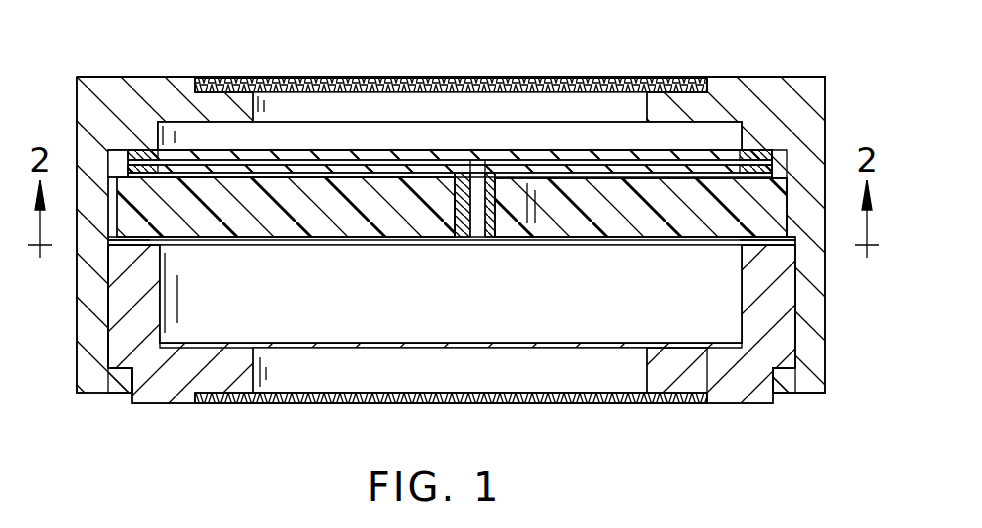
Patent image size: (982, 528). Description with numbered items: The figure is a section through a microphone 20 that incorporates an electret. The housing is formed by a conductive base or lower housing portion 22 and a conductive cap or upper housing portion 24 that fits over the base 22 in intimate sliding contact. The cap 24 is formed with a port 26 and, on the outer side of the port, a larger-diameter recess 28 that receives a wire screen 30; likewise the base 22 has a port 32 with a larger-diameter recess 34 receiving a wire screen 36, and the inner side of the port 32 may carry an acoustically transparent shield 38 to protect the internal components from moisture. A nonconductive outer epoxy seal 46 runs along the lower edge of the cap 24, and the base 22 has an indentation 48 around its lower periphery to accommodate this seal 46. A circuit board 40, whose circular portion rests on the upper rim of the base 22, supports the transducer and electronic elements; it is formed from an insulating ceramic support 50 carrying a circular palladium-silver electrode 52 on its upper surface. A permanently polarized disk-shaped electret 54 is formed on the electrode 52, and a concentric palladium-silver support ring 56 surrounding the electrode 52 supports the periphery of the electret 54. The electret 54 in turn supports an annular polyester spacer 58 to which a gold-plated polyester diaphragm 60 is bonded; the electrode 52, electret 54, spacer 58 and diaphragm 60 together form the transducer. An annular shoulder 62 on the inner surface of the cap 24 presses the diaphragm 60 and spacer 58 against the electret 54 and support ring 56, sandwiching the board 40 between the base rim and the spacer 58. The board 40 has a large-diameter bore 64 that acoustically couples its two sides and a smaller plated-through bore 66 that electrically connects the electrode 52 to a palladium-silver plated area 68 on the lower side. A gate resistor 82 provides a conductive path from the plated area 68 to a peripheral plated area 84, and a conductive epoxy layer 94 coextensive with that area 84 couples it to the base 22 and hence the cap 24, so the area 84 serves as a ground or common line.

The microphone 20 is at (821, 54).
The base or lower housing portion 22 is at (762, 320).
The cap or upper housing portion 24 is at (128, 77).
The port 26 is at (645, 110).
The recess 28 is at (223, 77).
The wire screen 30 is at (310, 78).
The port 32 is at (647, 370).
The recess 34 is at (345, 404).
The wire screen 36 is at (478, 393).
The acoustically transparent shield 38 is at (522, 343).
The circuit board 40 is at (346, 254).
The outer epoxy seal 46 is at (120, 392).
The indentation 48 is at (778, 384).
The ceramic support 50 is at (243, 240).
The electrode 52 is at (412, 180).
The electret 54 is at (243, 176).
The support ring 56 is at (152, 177).
The spacer 58 is at (745, 160).
The diaphragm 60 is at (364, 147).
The shoulder 62 is at (121, 153).
The bore 64 is at (622, 212).
The bore 66 is at (468, 210).
The plated area 68 is at (468, 240).
The gate resistor 82 is at (290, 254).
The peripheral plated area 84 is at (748, 246).
The conductive epoxy layer 94 is at (135, 248).